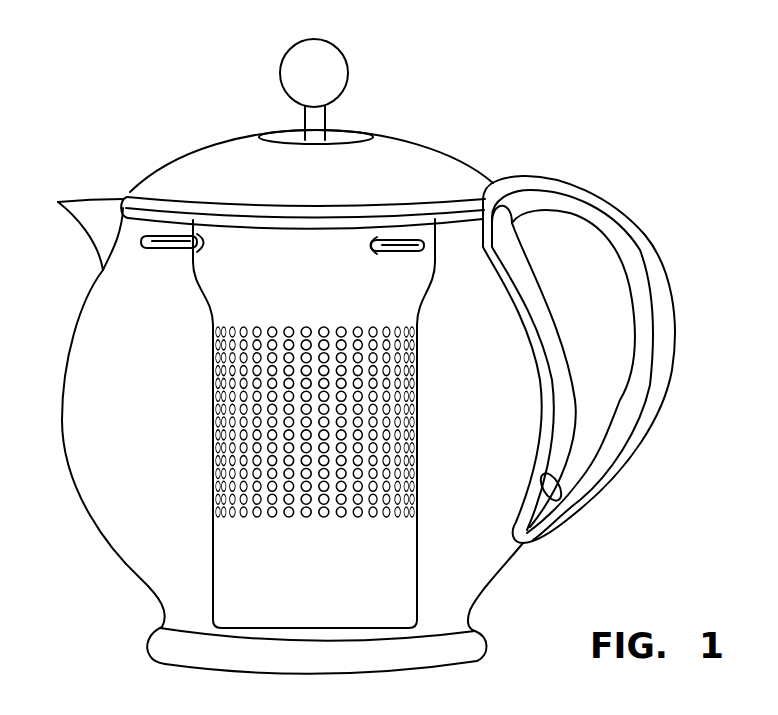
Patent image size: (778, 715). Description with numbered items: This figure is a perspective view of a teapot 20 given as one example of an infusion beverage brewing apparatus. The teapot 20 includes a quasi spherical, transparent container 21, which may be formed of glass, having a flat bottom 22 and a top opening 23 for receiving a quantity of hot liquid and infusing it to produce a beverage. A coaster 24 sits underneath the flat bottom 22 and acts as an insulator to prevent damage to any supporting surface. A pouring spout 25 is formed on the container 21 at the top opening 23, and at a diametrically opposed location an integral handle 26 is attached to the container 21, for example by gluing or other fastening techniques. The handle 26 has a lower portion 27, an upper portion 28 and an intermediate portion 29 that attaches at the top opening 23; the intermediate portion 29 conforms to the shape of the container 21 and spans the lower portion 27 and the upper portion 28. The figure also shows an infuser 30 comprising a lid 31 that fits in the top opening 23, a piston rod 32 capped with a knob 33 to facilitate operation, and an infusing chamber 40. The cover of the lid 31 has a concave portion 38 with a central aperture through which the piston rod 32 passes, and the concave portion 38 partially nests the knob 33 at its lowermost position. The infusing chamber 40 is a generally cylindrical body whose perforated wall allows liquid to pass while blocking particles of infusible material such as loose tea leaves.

The teapot 20 is at (663, 193).
The container 21 is at (80, 368).
The flat bottom 22 is at (470, 623).
The top opening 23 is at (130, 194).
The coaster 24 is at (463, 650).
The pouring spout 25 is at (73, 217).
The handle 26 is at (678, 313).
The lower portion 27 is at (557, 515).
The upper portion 28 is at (525, 182).
The intermediate portion 29 is at (563, 388).
The infuser 30 is at (213, 427).
The lid 31 is at (211, 148).
The piston rod 32 is at (325, 124).
The knob 33 is at (338, 80).
The concave portion 38 is at (280, 133).
The infusing chamber 40 is at (268, 600).